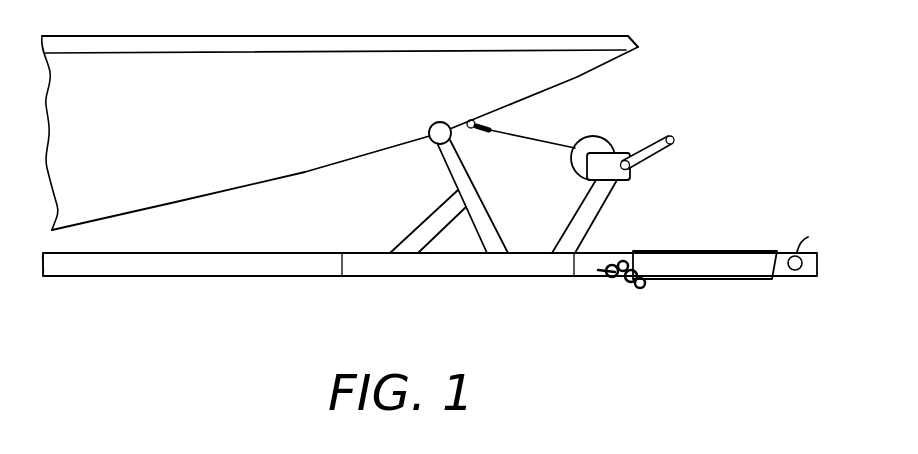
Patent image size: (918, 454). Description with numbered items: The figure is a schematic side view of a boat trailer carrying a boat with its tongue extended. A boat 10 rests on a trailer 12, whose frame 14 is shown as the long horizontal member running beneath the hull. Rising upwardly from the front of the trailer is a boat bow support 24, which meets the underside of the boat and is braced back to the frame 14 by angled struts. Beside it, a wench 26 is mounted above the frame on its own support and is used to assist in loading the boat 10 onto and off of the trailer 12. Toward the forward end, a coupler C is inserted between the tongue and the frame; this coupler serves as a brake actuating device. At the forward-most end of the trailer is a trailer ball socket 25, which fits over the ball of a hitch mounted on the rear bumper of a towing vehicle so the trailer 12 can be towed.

The boat 10 is at (162, 150).
The trailer 12 is at (237, 280).
The frame 14 is at (315, 263).
The boat bow support 24 is at (434, 146).
The trailer ball socket 25 is at (800, 268).
The wench 26 is at (630, 178).
The coupler C is at (790, 252).